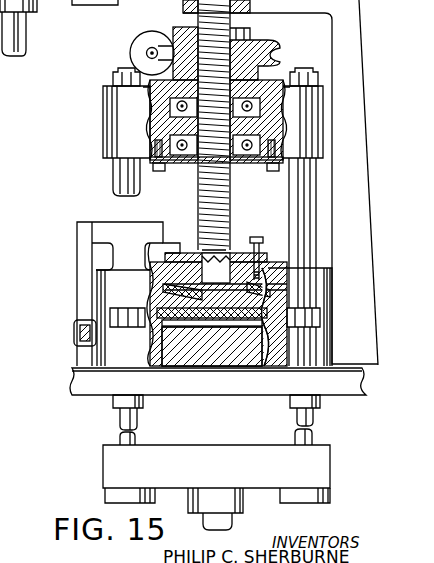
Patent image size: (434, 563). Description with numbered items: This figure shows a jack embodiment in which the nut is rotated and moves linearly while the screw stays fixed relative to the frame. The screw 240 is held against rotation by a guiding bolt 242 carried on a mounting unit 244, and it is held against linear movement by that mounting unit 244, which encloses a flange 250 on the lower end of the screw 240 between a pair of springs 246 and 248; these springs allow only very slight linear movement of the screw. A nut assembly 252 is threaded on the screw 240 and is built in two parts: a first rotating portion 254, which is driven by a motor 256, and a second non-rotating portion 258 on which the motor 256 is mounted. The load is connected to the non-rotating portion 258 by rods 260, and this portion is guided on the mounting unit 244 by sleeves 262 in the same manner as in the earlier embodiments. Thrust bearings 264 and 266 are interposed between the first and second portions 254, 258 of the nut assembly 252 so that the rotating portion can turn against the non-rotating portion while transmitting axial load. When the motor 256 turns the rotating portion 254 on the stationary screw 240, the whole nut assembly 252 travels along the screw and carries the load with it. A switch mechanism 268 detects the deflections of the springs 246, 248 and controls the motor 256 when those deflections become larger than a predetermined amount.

The screw 240 is at (198, 207).
The guiding bolt 242 is at (264, 231).
The mounting unit 244 is at (331, 298).
The spring 246 is at (252, 298).
The spring 248 is at (255, 366).
The flange 250 is at (300, 353).
The nut assembly 252 is at (283, 63).
The first rotating portion 254 is at (173, 30).
The motor 256 is at (129, 58).
The second non-rotating portion 258 is at (120, 128).
The rods 260 is at (118, 422).
The sleeves 262 is at (310, 204).
The thrust bearing 264 is at (258, 98).
The thrust bearing 266 is at (237, 171).
The switch mechanism 268 is at (78, 262).